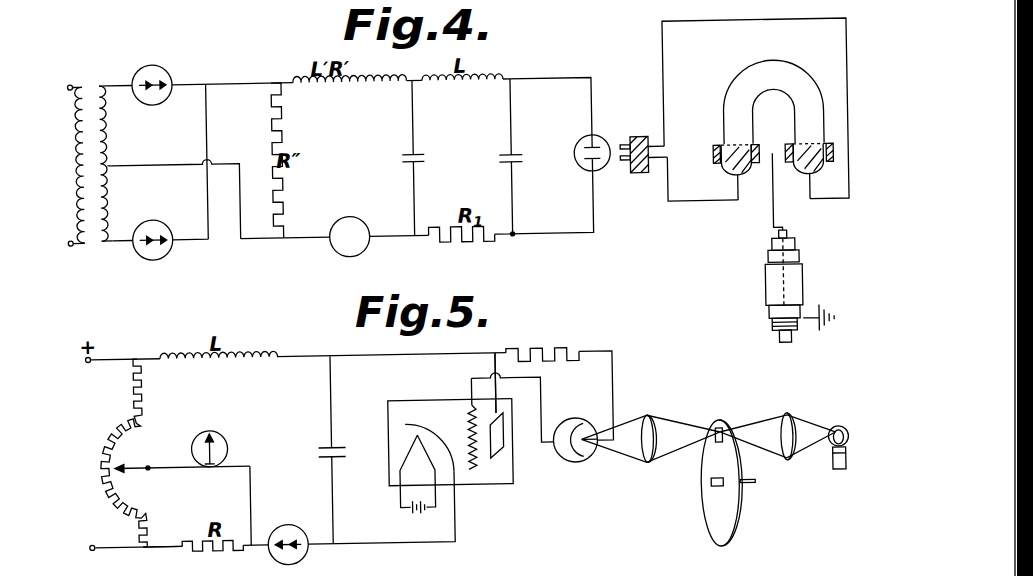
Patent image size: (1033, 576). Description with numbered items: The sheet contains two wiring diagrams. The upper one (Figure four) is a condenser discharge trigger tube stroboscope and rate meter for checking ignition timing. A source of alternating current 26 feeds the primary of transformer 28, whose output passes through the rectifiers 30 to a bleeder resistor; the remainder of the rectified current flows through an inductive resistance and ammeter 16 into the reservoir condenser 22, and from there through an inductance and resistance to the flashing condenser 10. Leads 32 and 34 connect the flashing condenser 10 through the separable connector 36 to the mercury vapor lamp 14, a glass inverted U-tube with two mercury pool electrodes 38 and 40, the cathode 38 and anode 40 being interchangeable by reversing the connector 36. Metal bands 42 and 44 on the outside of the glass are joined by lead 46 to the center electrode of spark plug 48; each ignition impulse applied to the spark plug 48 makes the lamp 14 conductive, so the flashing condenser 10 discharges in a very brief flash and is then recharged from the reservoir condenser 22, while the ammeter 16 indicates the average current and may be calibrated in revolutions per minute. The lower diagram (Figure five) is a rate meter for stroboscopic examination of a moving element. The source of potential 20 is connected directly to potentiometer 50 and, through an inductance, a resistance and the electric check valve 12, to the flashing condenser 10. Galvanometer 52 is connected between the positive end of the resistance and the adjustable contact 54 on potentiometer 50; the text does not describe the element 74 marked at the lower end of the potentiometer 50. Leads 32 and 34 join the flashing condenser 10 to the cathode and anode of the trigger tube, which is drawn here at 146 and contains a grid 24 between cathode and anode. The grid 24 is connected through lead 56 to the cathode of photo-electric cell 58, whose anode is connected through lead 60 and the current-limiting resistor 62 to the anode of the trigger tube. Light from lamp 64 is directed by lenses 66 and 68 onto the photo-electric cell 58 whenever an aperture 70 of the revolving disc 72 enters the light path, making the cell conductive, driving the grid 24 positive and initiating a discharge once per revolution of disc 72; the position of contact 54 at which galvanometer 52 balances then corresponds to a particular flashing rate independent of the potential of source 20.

In FIG. 4, the source of alternating current energy 26 is at (77, 80).
In FIG. 4, the transformer 28 is at (104, 82).
In FIG. 4, the rectifiers 30 is at (166, 70).
In FIG. 4, the ammeter 16 is at (361, 230).
In FIG. 4, the reservoir condenser 22 is at (419, 161).
In FIG. 4, the flashing condenser 10 is at (520, 163).
In FIG. 5, the flashing condenser 10 is at (332, 457).
In FIG. 4, the lead 34 is at (591, 85).
In FIG. 5, the lead 34 is at (494, 372).
In FIG. 4, the lead 32 is at (591, 242).
In FIG. 5, the lead 32 is at (452, 546).
In FIG. 4, the separable connector 36 is at (600, 176).
In FIG. 4, the mercury vapor lamp 14 is at (790, 78).
In FIG. 4, the metal band 42 is at (712, 159).
In FIG. 4, the metal band 44 is at (829, 153).
In FIG. 4, the mercury pool electrode 38 is at (724, 182).
In FIG. 4, the mercury pool electrode 40 is at (805, 187).
In FIG. 4, the lead 46 is at (766, 181).
In FIG. 4, the spark plug 48 is at (801, 291).
In FIG. 5, the potentiometer 50 is at (122, 432).
In FIG. 5, the adjustable contact 54 is at (138, 467).
In FIG. 5, the galvanometer 52 is at (226, 450).
In FIG. 5, the electric check valve 12 is at (288, 528).
In FIG. 5, the source of potential 20 is at (97, 552).
In FIG. 5, the junction 74 is at (140, 548).
In FIG. 5, the photoelectric cell 146 is at (387, 419).
In FIG. 5, the grid 24 is at (454, 424).
In FIG. 5, the lead 56 is at (541, 413).
In FIG. 5, the photo-electric cell 58 is at (578, 471).
In FIG. 5, the lead 60 is at (613, 361).
In FIG. 5, the resistor 62 is at (543, 343).
In FIG. 5, the lens 68 is at (651, 424).
In FIG. 5, the aperture 70 is at (725, 436).
In FIG. 5, the lens 66 is at (787, 425).
In FIG. 5, the revolving disc 72 is at (722, 530).
In FIG. 5, the lamp 64 is at (833, 480).